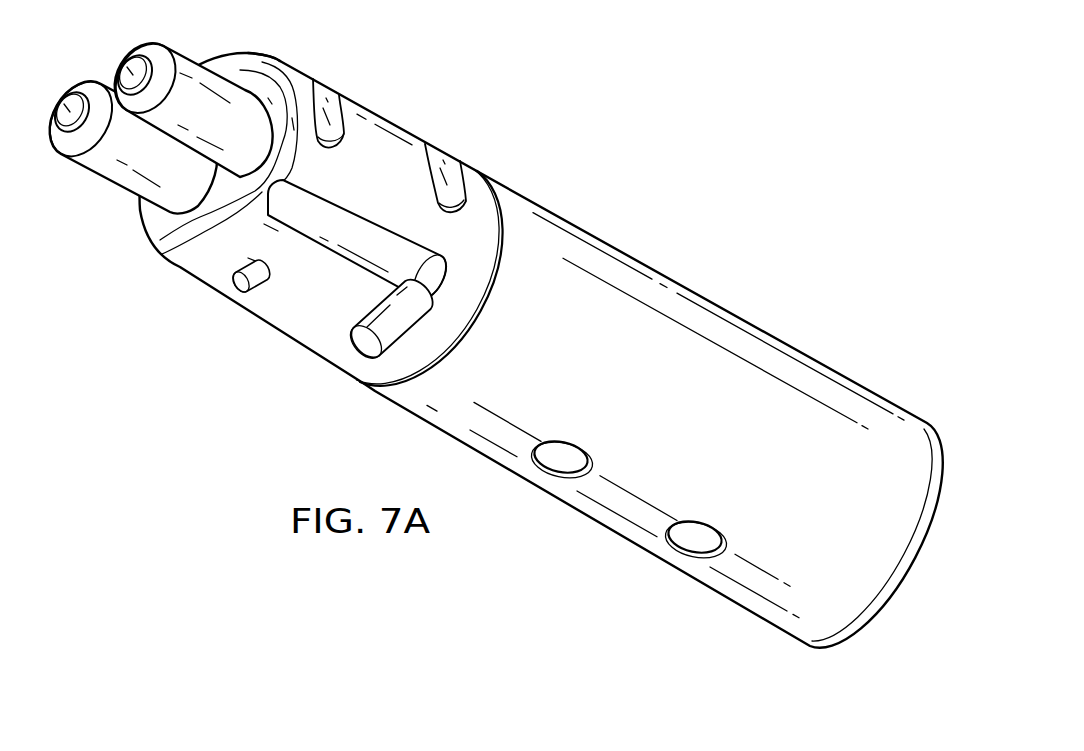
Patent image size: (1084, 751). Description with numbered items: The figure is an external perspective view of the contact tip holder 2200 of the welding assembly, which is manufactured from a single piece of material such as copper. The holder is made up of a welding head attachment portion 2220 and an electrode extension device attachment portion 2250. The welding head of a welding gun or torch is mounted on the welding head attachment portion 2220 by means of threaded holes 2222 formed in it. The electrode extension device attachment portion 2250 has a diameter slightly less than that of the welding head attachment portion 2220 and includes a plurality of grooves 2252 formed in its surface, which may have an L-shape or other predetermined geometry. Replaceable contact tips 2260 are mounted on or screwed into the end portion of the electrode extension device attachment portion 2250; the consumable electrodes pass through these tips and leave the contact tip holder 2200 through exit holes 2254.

The contact tip holder 2200 is at (651, 78).
The welding head attachment portion 2220 is at (672, 280).
The threaded holes 2222 is at (560, 457).
The electrode extension device attachment portion 2250 is at (272, 327).
The grooves 2252 is at (367, 76).
The exit holes 2254 is at (53, 106).
The replaceable contact tips 2260 is at (196, 62).